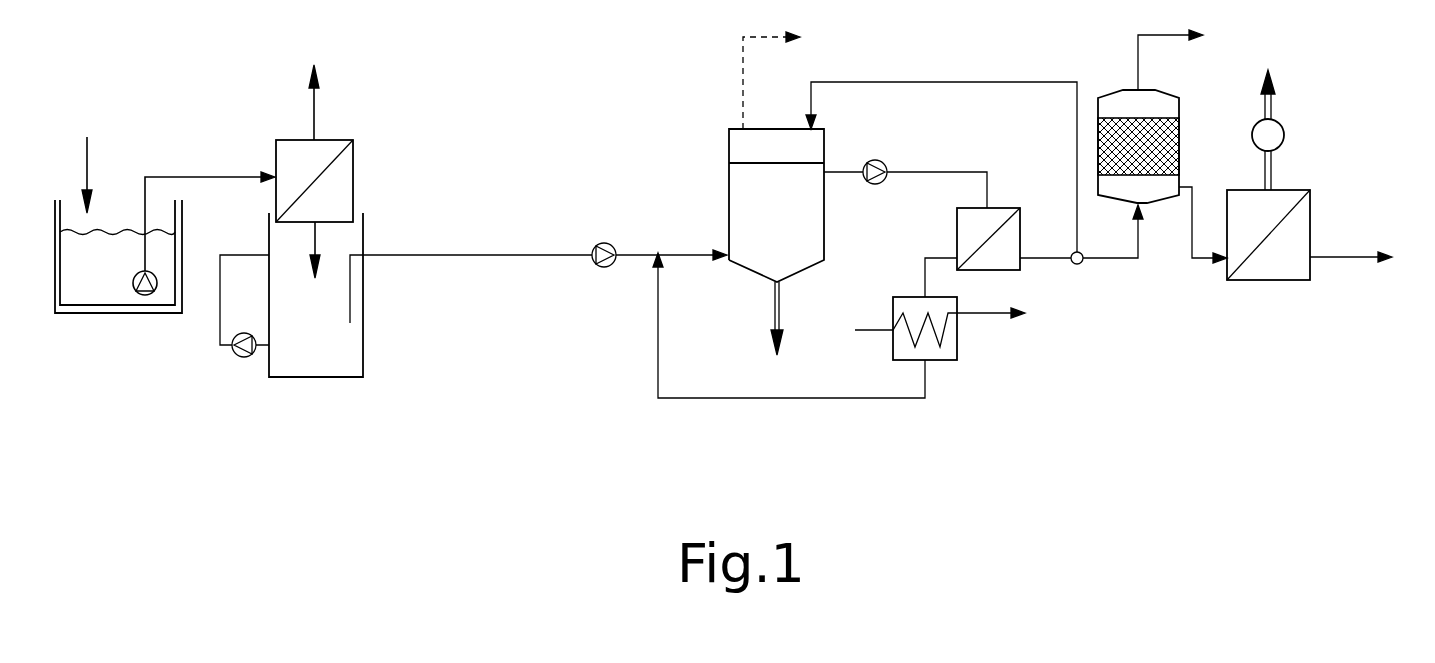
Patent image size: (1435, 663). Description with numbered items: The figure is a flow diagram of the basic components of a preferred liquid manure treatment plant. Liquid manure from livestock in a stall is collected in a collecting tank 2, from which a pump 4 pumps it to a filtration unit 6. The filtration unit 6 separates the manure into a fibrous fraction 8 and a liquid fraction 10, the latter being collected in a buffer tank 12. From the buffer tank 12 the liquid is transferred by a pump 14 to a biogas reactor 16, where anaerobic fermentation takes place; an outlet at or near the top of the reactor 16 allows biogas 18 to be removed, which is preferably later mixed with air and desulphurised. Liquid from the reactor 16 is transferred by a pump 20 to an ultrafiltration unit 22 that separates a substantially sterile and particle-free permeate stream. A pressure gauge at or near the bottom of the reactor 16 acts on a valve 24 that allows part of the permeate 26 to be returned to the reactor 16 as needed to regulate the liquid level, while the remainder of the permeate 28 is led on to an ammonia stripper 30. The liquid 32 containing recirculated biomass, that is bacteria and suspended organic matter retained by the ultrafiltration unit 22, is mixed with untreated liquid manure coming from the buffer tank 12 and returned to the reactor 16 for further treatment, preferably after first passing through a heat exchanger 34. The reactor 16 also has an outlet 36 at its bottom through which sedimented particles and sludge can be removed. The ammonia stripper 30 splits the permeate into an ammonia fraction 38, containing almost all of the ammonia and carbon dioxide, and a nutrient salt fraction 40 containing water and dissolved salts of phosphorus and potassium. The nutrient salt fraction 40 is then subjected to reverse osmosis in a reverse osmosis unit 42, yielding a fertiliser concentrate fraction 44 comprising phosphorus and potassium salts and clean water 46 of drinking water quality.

The collecting tank 2 is at (118, 208).
The pump 4 is at (132, 288).
The filtration unit 6 is at (353, 165).
The fibrous fraction 8 is at (314, 86).
The liquid fraction 10 is at (316, 270).
The buffer tank 12 is at (313, 378).
The pump 14 is at (598, 265).
The biogas reactor 16 is at (729, 172).
The biogas 18 is at (792, 76).
The pump 20 is at (880, 160).
The ultrafiltration unit 22 is at (1013, 208).
The valve 24 is at (1082, 265).
The permeate 26 is at (957, 82).
The remainder of the permeate 28 is at (1123, 258).
The ammonia stripper 30 is at (1123, 90).
The liquid containing recirculated biomass 32 is at (780, 398).
The heat exchanger 34 is at (957, 350).
The outlet 36 is at (772, 287).
The ammonia fraction 38 is at (1189, 55).
The nutrient salt fraction 40 is at (1193, 260).
The reverse osmosis unit 42 is at (1260, 280).
The fertiliser concentrate fraction 44 is at (1268, 114).
The clean water 46 is at (1370, 258).